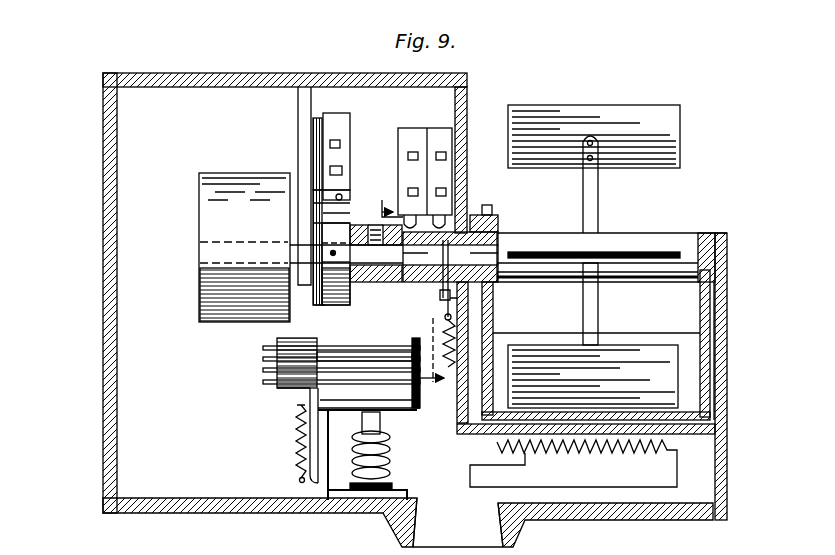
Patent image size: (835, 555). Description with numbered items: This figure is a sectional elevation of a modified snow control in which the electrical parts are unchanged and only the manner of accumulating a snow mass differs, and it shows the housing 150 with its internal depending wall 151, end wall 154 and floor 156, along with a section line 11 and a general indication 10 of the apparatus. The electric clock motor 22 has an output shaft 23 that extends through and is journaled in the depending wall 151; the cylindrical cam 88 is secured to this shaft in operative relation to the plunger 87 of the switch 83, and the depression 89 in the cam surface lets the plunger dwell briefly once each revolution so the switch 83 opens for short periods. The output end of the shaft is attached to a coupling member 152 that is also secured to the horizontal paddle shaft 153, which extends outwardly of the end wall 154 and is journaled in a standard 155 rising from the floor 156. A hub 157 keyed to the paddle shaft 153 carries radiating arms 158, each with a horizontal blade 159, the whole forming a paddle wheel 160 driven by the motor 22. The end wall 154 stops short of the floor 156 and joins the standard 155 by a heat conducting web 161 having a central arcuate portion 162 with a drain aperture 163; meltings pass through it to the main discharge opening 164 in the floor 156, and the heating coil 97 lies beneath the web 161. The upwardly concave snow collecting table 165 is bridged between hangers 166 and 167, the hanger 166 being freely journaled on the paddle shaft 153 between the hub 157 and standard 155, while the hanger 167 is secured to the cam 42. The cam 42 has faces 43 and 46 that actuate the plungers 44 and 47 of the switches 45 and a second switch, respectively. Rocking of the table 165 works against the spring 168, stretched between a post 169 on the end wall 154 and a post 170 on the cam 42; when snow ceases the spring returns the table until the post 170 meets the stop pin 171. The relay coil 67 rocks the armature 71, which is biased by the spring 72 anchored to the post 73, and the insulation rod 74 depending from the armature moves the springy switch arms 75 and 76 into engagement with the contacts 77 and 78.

The apparatus 10 is at (720, 209).
The section line 11 is at (405, 302).
The electric clock motor 22 is at (218, 247).
The output shaft 23 is at (199, 274).
The cam 42 is at (441, 334).
The face 43 is at (137, 544).
The plunger 44 is at (470, 222).
The electric switch 45 is at (455, 125).
The face 46 is at (222, 548).
The plunger 47 is at (437, 212).
The relay coil 67 is at (392, 462).
The armature 71 is at (326, 420).
The spring 72 is at (298, 455).
The post 73 is at (300, 481).
The insulation rod 74 is at (422, 410).
The switch arm 75 is at (402, 360).
The switch arm 76 is at (410, 392).
The contact 77 is at (338, 342).
The contact 78 is at (413, 128).
The switch 83 is at (346, 113).
The plunger 87 is at (342, 197).
The cylindrical cam 88 is at (322, 306).
The depression 89 is at (330, 214).
The heating coil 97 is at (562, 452).
The housing 150 is at (381, 306).
The depending wall 151 is at (300, 112).
The coupling member 152 is at (370, 290).
The paddle shaft 153 is at (394, 253).
The end wall 154 is at (468, 86).
The standard 155 is at (717, 332).
The floor 156 is at (605, 520).
The hub 157 is at (645, 233).
The arm 158 is at (599, 190).
The blade 159 is at (682, 133).
The paddle wheel 160 is at (692, 102).
The web 161 is at (705, 393).
The arcuate portion 162 is at (692, 440).
The drain aperture 163 is at (460, 424).
The main discharge opening 164 is at (418, 528).
The snow collecting table 165 is at (700, 408).
The hanger 166 is at (625, 359).
The hanger 167 is at (497, 313).
The spring 168 is at (494, 328).
The post 169 is at (593, 376).
The post 170 is at (432, 280).
The stop pin 171 is at (470, 300).